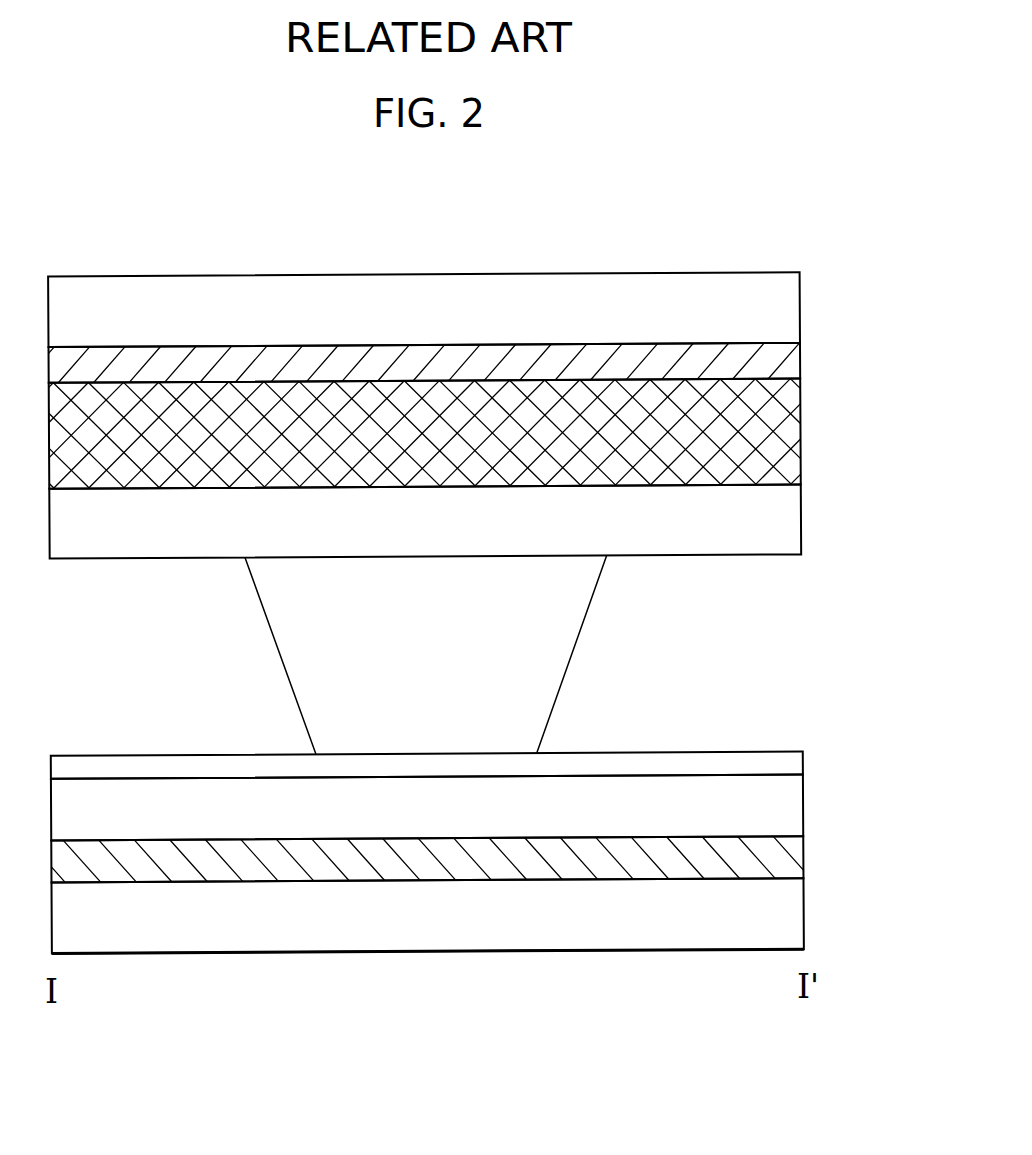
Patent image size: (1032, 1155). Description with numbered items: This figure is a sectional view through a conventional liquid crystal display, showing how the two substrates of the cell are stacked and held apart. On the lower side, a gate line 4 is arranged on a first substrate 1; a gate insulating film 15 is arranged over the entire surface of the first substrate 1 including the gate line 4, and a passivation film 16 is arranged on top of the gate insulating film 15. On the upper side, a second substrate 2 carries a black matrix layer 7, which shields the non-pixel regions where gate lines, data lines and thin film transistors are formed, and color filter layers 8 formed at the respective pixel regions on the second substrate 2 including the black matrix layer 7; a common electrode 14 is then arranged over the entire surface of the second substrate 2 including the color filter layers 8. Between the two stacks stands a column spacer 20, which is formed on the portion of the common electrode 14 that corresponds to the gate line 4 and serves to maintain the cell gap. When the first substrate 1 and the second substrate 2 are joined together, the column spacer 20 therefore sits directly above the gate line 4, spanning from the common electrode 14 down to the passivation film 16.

The first substrate 1 is at (788, 913).
The gate line 4 is at (788, 861).
The gate insulating film 15 is at (788, 813).
The passivation film 16 is at (788, 767).
The column spacer 20 is at (558, 660).
The common electrode 14 is at (781, 518).
The color filter layers 8 is at (781, 453).
The black matrix layer 7 is at (781, 367).
The second substrate 2 is at (781, 311).